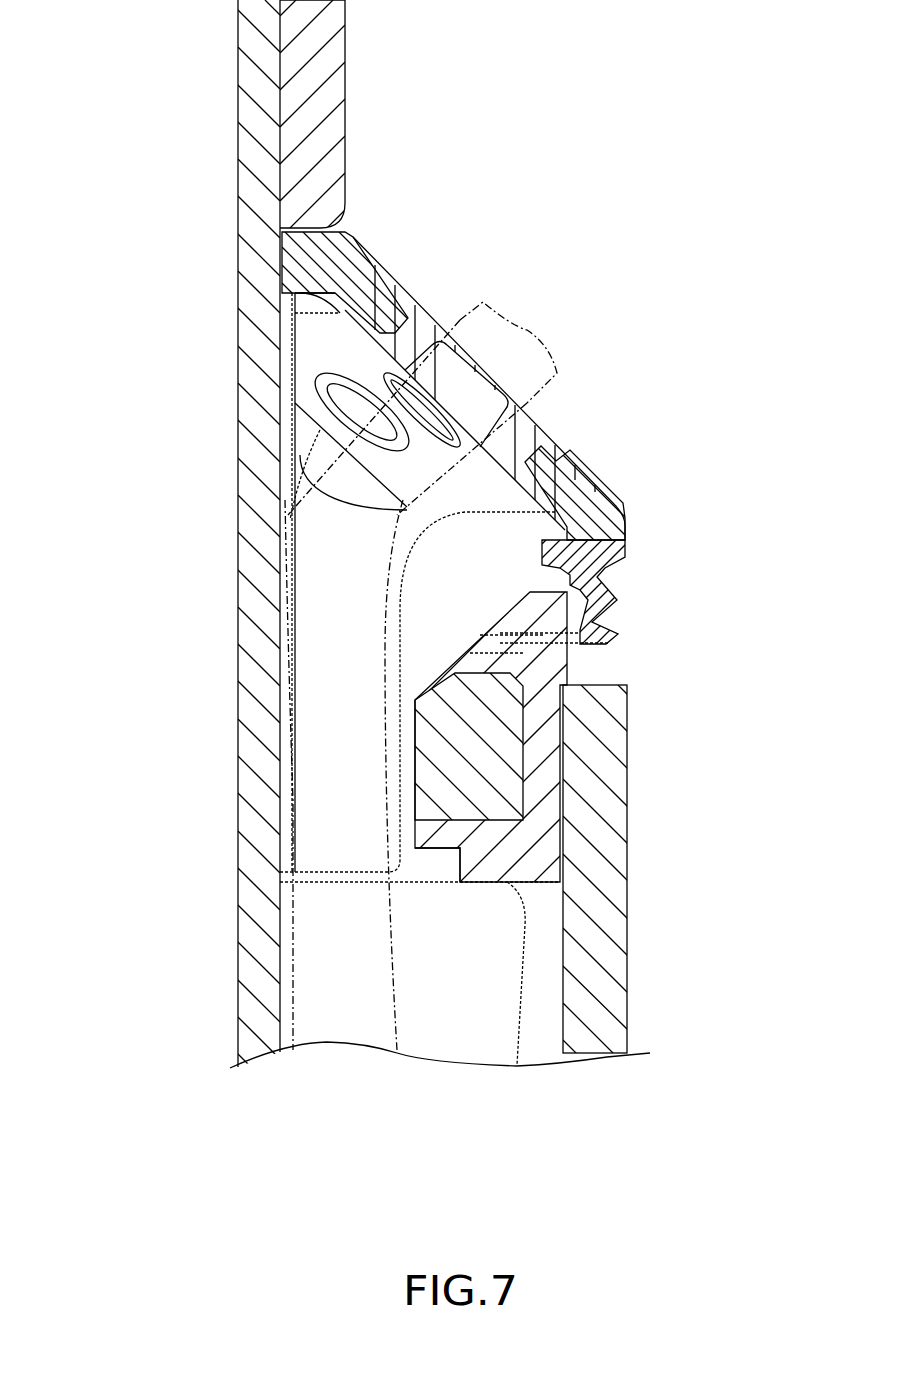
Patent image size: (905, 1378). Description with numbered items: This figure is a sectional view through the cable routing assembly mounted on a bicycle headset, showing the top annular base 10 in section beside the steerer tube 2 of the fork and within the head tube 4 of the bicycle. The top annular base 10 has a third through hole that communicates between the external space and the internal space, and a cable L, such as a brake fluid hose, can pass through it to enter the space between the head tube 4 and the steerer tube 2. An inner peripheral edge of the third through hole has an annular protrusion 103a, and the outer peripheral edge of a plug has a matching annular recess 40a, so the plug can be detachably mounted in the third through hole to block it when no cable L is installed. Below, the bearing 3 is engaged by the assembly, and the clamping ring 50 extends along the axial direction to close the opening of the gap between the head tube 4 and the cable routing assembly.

The steerer tube 2 is at (238, 470).
The bearing 3 is at (493, 732).
The head tube 4 is at (630, 907).
The top annular base 10 is at (627, 499).
The recess 40a is at (410, 290).
The protrusion 103a is at (553, 457).
The clamping ring 50 is at (620, 603).
The cable L is at (527, 330).